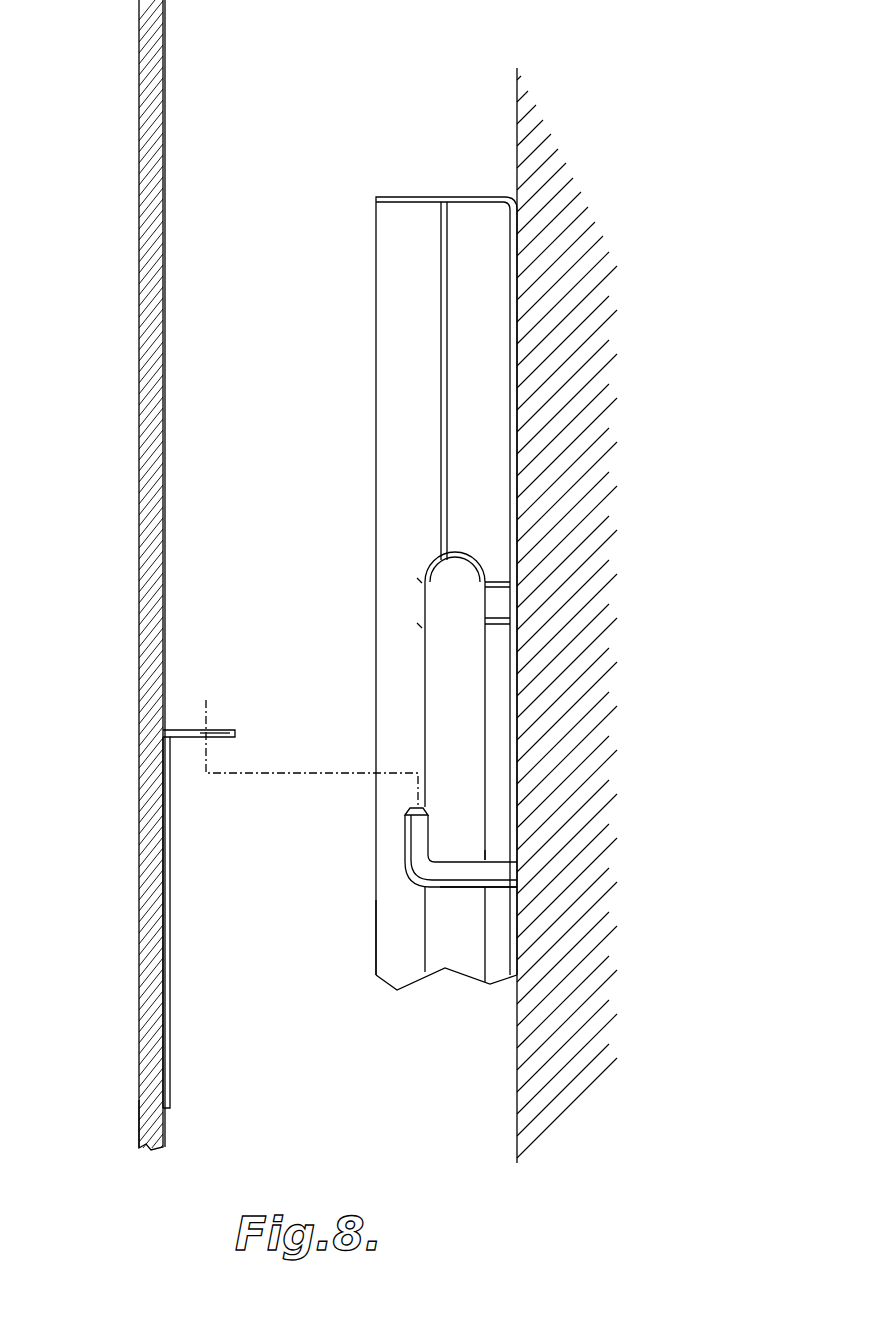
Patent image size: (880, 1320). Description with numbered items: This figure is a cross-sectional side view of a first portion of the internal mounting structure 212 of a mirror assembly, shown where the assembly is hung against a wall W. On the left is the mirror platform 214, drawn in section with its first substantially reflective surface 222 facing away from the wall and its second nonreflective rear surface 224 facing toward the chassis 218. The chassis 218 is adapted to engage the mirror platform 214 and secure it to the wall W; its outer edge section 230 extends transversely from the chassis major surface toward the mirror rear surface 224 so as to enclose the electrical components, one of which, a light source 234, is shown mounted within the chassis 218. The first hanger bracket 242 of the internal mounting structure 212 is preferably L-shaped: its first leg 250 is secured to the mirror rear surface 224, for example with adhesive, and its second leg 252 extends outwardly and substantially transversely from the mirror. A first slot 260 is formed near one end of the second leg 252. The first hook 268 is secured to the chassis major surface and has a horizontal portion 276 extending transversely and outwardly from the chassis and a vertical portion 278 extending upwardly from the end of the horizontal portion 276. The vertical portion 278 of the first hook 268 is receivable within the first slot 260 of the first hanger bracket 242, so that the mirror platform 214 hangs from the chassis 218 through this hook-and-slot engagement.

The wall W is at (580, 118).
The internal mounting structure 212 is at (305, 1048).
The mirror platform 214 is at (124, 1150).
The chassis 218 is at (490, 1003).
The first substantially reflective surface 222 is at (139, 73).
The second nonreflective rear surface 224 is at (163, 99).
The outer edge section 230 is at (420, 197).
The light source 234 is at (455, 553).
The first hanger bracket 242 is at (178, 1024).
The first leg 250 is at (169, 915).
The second leg 252 is at (180, 730).
The first slot 260 is at (214, 730).
The first hook 268 is at (470, 843).
The horizontal portion 276 is at (462, 888).
The vertical portion 278 is at (405, 833).